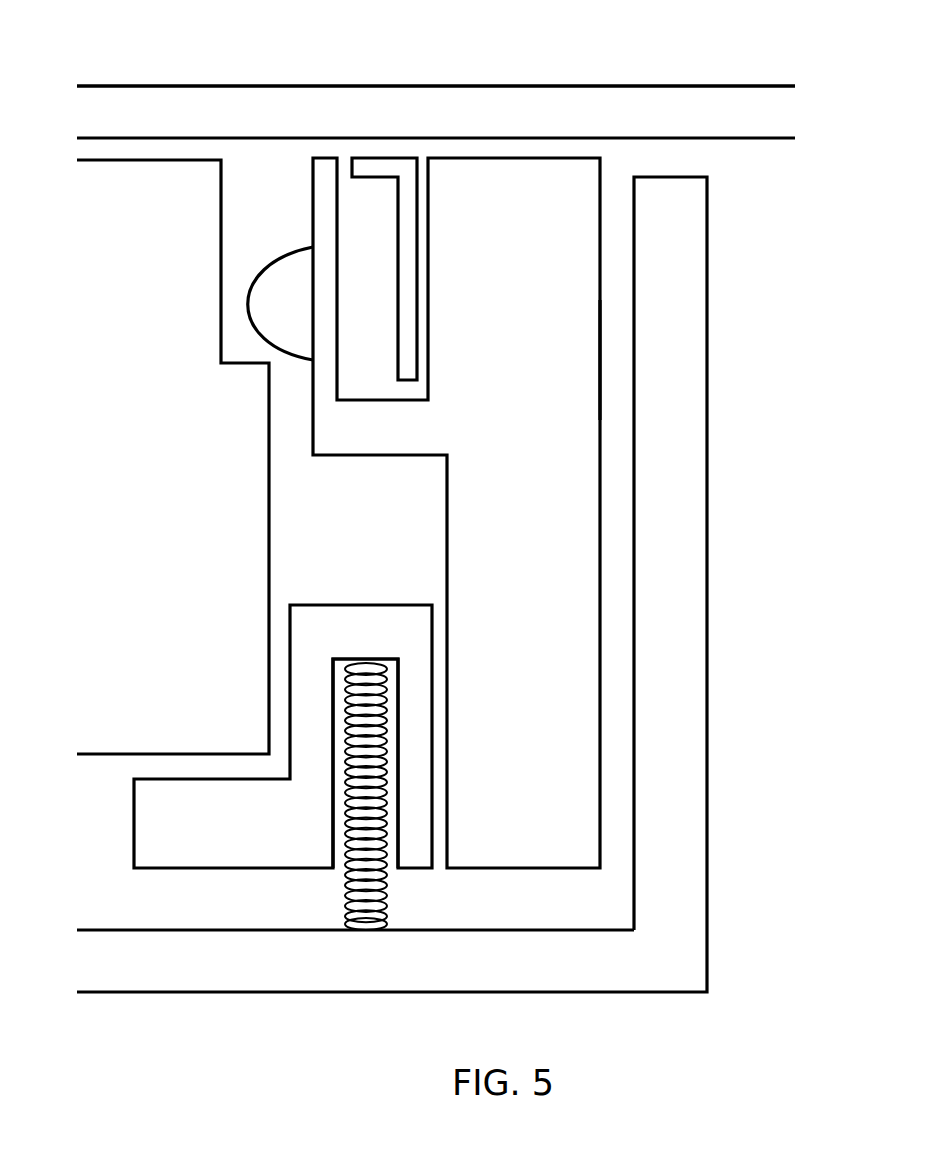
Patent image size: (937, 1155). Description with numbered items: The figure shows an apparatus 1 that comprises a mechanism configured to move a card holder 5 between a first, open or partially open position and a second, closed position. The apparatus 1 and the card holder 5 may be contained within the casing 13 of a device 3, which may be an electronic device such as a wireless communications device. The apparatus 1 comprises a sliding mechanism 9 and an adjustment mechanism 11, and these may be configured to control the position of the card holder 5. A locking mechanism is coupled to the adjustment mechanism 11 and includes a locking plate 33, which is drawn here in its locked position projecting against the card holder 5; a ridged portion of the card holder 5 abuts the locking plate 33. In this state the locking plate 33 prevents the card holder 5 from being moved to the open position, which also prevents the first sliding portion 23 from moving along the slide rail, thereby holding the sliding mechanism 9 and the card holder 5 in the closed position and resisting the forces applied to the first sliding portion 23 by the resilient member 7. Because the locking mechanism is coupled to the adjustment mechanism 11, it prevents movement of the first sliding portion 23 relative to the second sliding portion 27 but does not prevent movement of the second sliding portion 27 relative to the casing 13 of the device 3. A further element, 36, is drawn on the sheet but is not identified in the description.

The apparatus 1 is at (575, 263).
The device 3 is at (570, 100).
The card holder 5 is at (183, 180).
The resilient member 7 is at (388, 752).
The sliding mechanism 9 is at (418, 635).
The adjustment mechanism 11 is at (577, 437).
The casing 13 is at (663, 102).
The first sliding portion 23 is at (415, 686).
The second sliding portion 27 is at (577, 351).
The locking plate 33 is at (296, 272).
The hook 36 is at (385, 168).